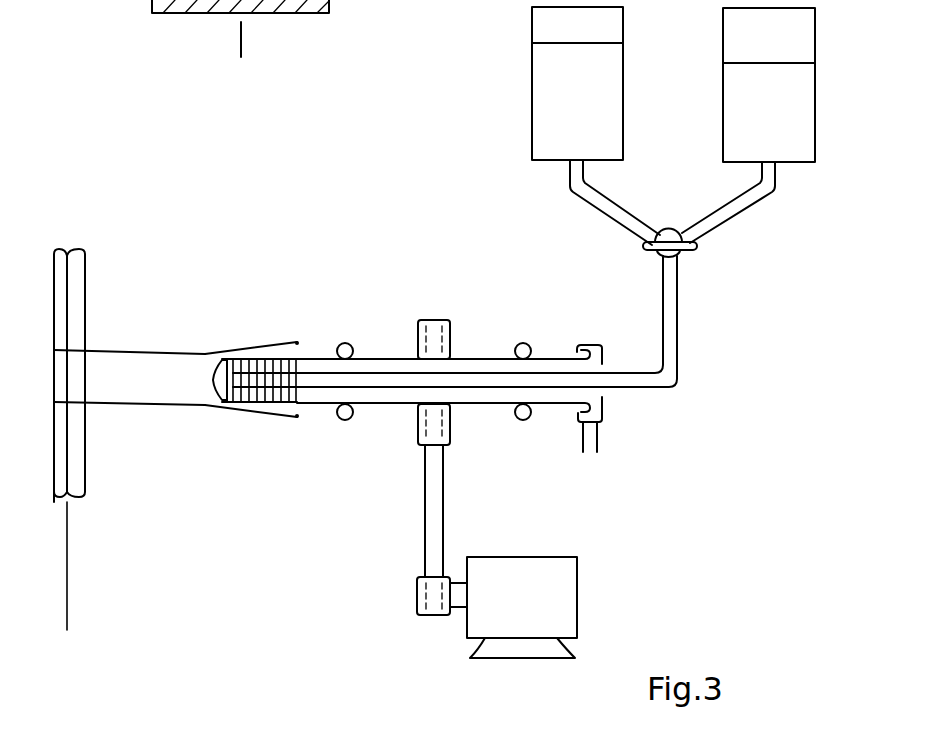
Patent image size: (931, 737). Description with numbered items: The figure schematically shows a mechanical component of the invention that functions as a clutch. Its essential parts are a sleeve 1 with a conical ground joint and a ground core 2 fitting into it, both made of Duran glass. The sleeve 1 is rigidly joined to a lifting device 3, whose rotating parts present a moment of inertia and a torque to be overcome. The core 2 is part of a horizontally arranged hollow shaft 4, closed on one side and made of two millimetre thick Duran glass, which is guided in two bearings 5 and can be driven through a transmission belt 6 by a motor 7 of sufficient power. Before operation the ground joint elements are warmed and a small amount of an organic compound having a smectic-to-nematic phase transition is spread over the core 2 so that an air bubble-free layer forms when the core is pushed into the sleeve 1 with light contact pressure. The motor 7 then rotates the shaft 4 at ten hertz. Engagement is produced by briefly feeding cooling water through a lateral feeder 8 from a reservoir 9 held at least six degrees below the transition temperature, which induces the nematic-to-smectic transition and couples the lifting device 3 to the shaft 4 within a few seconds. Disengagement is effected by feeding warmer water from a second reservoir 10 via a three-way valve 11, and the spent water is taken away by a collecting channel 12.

The sleeve 1 is at (253, 338).
The ground core 2 is at (285, 347).
The lifting device 3 is at (85, 312).
The hollow shaft 4 is at (395, 357).
The bearings 5 is at (517, 422).
The transmission belt 6 is at (418, 562).
The motor 7 is at (462, 628).
The lateral feeder 8 is at (657, 390).
The reservoir 9 is at (543, 140).
The reservoir 10 is at (747, 123).
The three-way valve 11 is at (690, 260).
The collecting channel 12 is at (603, 455).